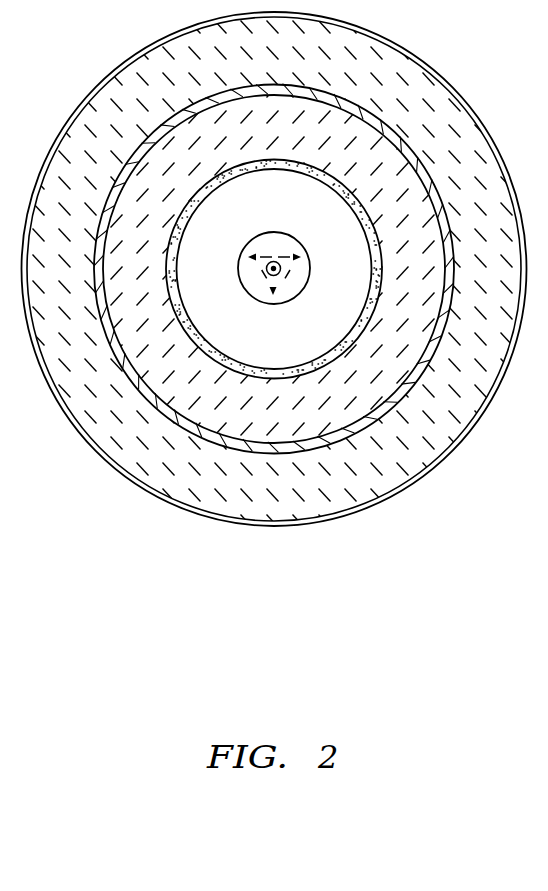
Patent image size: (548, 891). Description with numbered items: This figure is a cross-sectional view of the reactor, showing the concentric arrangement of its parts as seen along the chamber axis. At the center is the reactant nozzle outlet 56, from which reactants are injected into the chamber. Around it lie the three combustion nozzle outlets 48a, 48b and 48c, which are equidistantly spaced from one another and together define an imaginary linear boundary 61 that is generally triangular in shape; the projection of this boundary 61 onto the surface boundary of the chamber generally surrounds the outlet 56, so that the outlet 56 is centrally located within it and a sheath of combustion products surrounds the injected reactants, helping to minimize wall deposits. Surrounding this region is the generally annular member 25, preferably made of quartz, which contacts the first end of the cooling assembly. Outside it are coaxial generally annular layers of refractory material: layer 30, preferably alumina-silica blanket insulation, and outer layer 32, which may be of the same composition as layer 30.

The generally annular member 25 is at (222, 283).
The layer 30 is at (158, 283).
The layer 32 is at (80, 283).
The reactant nozzle outlet 56 is at (273, 256).
The imaginary linear boundary 61 is at (292, 276).
The outlet end 48a is at (254, 256).
The outlet end 48b is at (296, 256).
The outlet end 48c is at (274, 296).